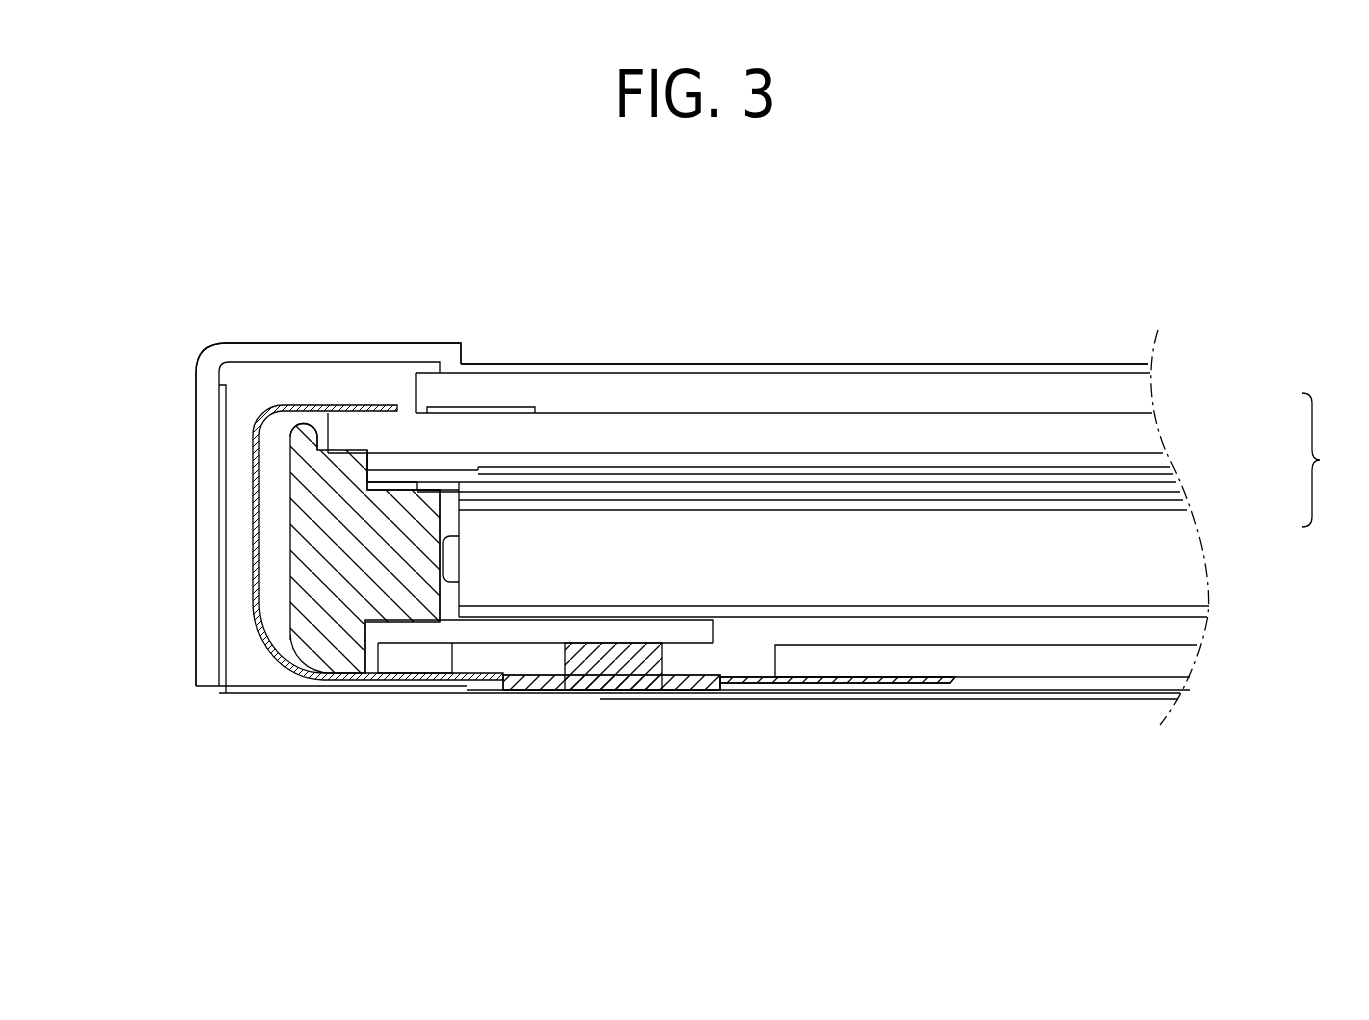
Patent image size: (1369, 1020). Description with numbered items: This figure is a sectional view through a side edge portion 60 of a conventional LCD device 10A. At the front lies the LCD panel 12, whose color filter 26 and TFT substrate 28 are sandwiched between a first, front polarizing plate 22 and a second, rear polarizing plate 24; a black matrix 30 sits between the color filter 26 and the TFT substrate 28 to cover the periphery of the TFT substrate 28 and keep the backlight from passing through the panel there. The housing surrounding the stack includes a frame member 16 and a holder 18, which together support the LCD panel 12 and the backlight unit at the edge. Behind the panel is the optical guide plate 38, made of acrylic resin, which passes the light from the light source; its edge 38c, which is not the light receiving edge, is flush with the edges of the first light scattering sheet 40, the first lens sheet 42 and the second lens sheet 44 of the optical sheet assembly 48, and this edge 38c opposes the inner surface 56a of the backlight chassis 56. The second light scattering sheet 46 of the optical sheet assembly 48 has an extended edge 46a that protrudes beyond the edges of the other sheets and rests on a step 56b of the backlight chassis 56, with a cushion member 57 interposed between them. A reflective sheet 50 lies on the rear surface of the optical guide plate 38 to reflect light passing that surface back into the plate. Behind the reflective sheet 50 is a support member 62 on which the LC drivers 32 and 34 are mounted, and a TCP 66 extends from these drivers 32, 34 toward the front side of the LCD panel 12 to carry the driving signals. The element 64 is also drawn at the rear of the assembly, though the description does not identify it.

The conventional LCD device 10A is at (932, 217).
The LCD panel 12 is at (792, 285).
The frame member 16 is at (203, 400).
The holder 18 is at (433, 691).
The first polarizing plate 22 is at (720, 372).
The second polarizing plate 24 is at (655, 462).
The color filter 26 is at (612, 392).
The TFT substrate 28 is at (558, 425).
The black matrix 30 is at (509, 410).
The drive circuit 32 is at (607, 673).
The drive circuit 34 is at (729, 743).
The optical guide plate 38 is at (1192, 561).
The edge of optical guide plate 38c is at (456, 548).
The first light scattering sheet 40 is at (1190, 511).
The first lens sheet 42 is at (1185, 501).
The second lens sheet 44 is at (1180, 493).
The second light scattering sheet 46 is at (1173, 484).
The extended edge 46a is at (387, 476).
The optical sheet assembly 48 is at (1331, 460).
The reflective sheet 50 is at (1208, 615).
The backlight chassis 56 is at (330, 643).
The inner surface of backlight chassis 56a is at (437, 583).
The step of backlight chassis 56b is at (380, 514).
The cushion member 57 is at (393, 495).
The side edge portion 60 is at (288, 280).
The support member 62 is at (472, 630).
The adhesive tape 64 is at (400, 656).
The TCP 66 is at (263, 633).